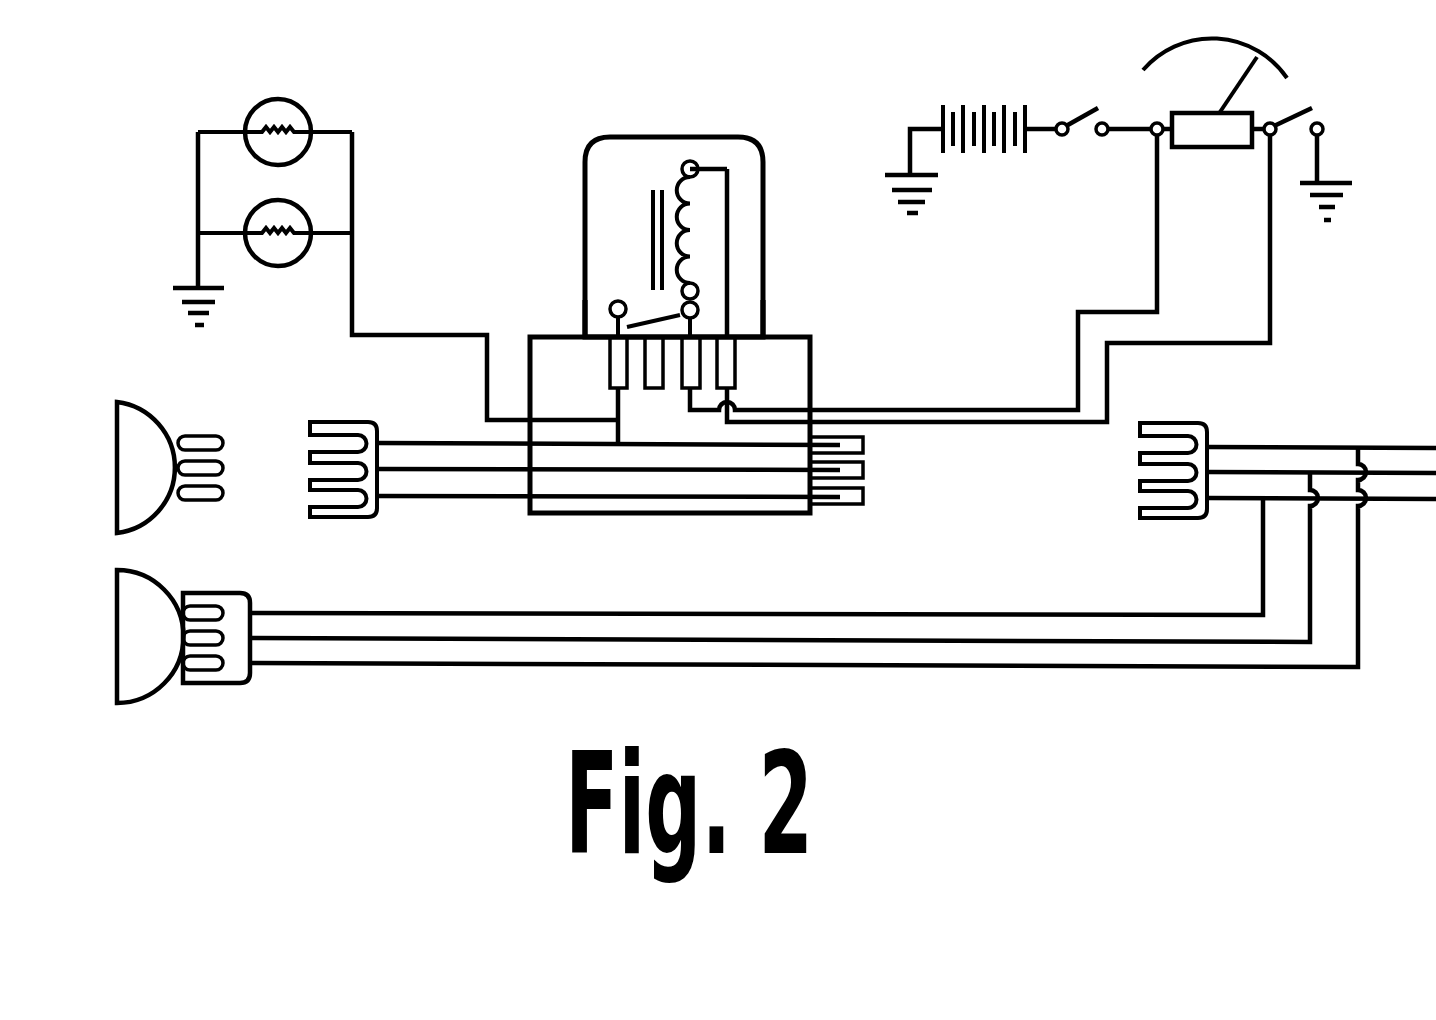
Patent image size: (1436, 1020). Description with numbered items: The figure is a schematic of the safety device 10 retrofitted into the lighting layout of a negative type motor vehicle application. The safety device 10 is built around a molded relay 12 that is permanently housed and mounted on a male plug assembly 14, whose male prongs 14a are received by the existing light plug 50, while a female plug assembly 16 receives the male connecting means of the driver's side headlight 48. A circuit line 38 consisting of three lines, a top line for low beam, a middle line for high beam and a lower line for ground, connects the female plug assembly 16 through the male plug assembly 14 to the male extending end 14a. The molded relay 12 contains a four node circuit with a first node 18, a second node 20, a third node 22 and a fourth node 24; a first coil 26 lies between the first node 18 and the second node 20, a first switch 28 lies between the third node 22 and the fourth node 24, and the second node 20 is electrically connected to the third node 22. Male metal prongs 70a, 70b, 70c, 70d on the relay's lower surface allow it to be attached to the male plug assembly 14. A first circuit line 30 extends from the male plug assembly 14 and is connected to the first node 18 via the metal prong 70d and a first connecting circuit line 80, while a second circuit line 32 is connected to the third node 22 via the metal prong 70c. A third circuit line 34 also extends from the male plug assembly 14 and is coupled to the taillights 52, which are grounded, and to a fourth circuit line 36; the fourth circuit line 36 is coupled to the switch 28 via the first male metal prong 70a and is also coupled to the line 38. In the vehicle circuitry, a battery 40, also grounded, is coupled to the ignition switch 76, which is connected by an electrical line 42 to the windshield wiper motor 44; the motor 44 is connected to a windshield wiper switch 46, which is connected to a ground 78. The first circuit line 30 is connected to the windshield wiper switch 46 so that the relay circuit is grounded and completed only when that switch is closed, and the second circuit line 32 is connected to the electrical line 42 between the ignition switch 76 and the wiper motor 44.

The safety device 10 is at (780, 320).
The molded relay 12 is at (707, 137).
The male plug assembly 14 is at (630, 522).
The male prongs 14a is at (852, 500).
The female plug assembly 16 is at (333, 423).
The first node 18 is at (688, 160).
The second node 20 is at (697, 287).
The third node 22 is at (700, 313).
The fourth node 24 is at (610, 305).
The first coil 26 is at (675, 182).
The first switch 28 is at (653, 317).
The first circuit line 30 is at (1273, 245).
The second circuit line 32 is at (1077, 373).
The third circuit line 34 is at (357, 252).
The fourth circuit line 36 is at (618, 417).
The circuit line 38 is at (458, 502).
The battery 40 is at (987, 102).
The electrical line 42 is at (1162, 125).
The windshield wiper motor 44 is at (1233, 132).
The windshield wiper switch 46 is at (1290, 110).
The headlight 48 is at (140, 507).
The existing light plug 50 is at (1175, 517).
The taillights 52 is at (310, 217).
The first male metal prong 70a is at (608, 365).
The male metal prong 70b is at (653, 370).
The male metal prong 70c is at (733, 393).
The male metal prong 70d is at (738, 350).
The ignition switch 76 is at (1082, 112).
The ground 78 is at (1342, 213).
The first connecting circuit line 80 is at (730, 207).